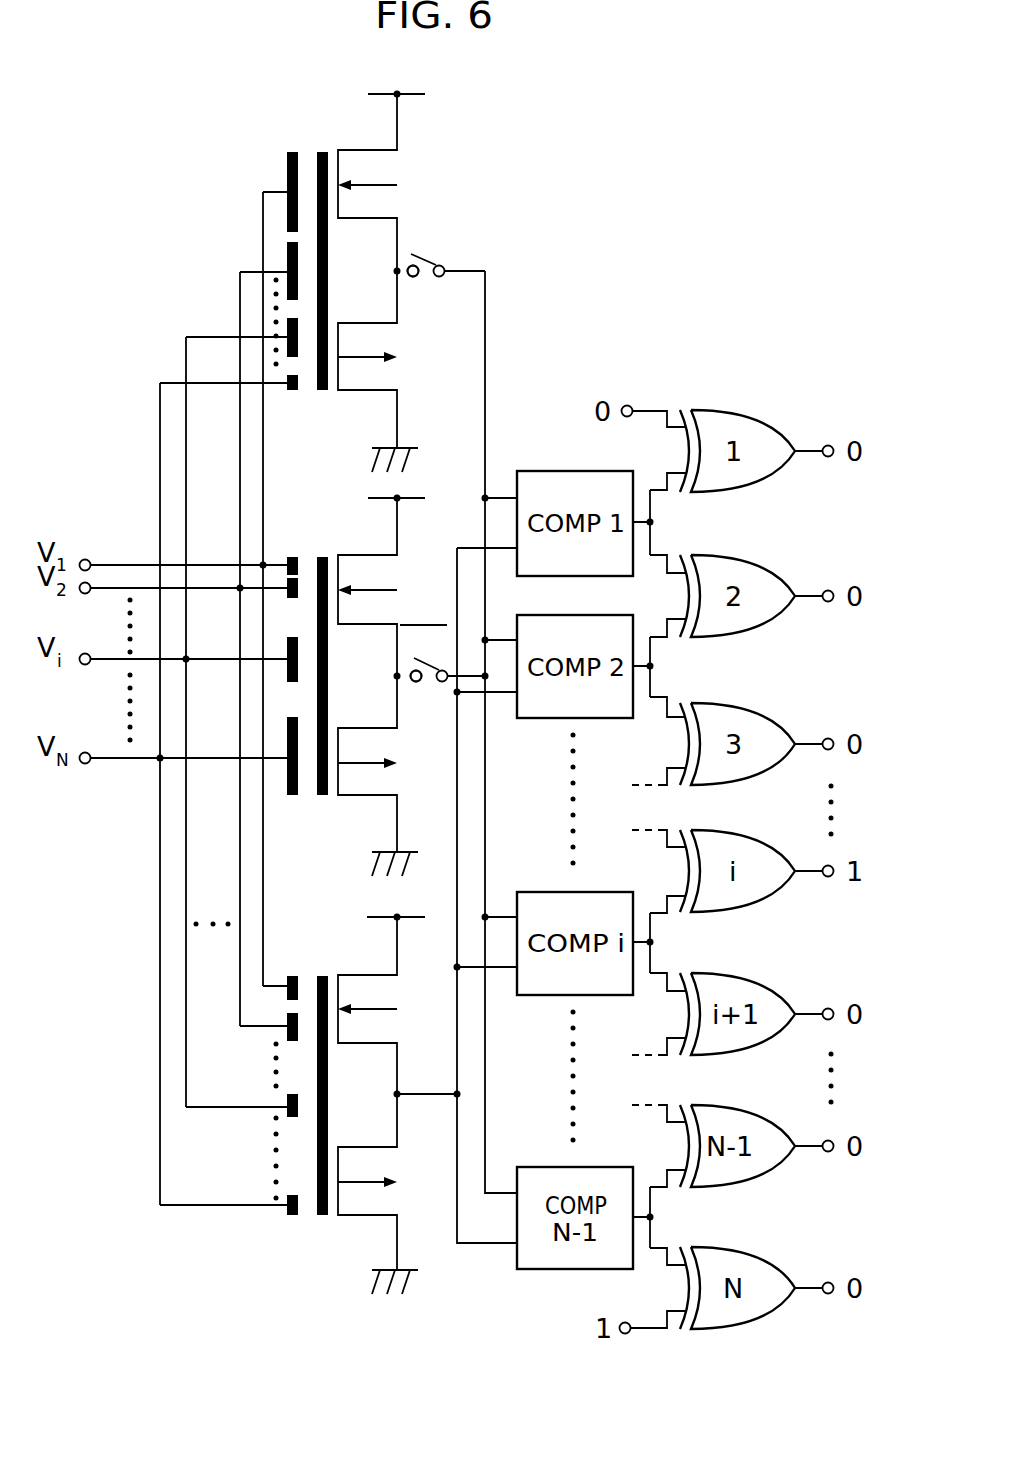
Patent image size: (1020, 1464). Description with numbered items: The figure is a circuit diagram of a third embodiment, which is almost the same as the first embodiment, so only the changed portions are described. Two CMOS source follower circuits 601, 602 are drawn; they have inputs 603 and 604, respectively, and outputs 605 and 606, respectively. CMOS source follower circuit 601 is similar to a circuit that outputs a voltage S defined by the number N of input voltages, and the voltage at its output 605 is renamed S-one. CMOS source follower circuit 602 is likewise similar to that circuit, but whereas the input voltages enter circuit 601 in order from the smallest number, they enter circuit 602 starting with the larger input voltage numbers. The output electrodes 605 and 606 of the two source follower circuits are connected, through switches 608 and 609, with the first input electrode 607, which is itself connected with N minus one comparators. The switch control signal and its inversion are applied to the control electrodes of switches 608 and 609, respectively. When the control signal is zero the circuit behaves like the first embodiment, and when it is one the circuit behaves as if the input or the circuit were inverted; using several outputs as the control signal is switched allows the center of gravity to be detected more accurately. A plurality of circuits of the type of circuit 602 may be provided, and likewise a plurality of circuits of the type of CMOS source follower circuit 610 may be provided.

The CMOS source follower circuit 601 is at (363, 555).
The CMOS source follower circuit 602 is at (355, 150).
The input 603 is at (320, 556).
The input 604 is at (322, 150).
The output electrode 605 is at (395, 675).
The output electrode 606 is at (425, 217).
The first input electrode 607 is at (487, 297).
The switch 608 is at (423, 683).
The switch 609 is at (420, 278).
The CMOS source follower circuit 610 is at (430, 1159).